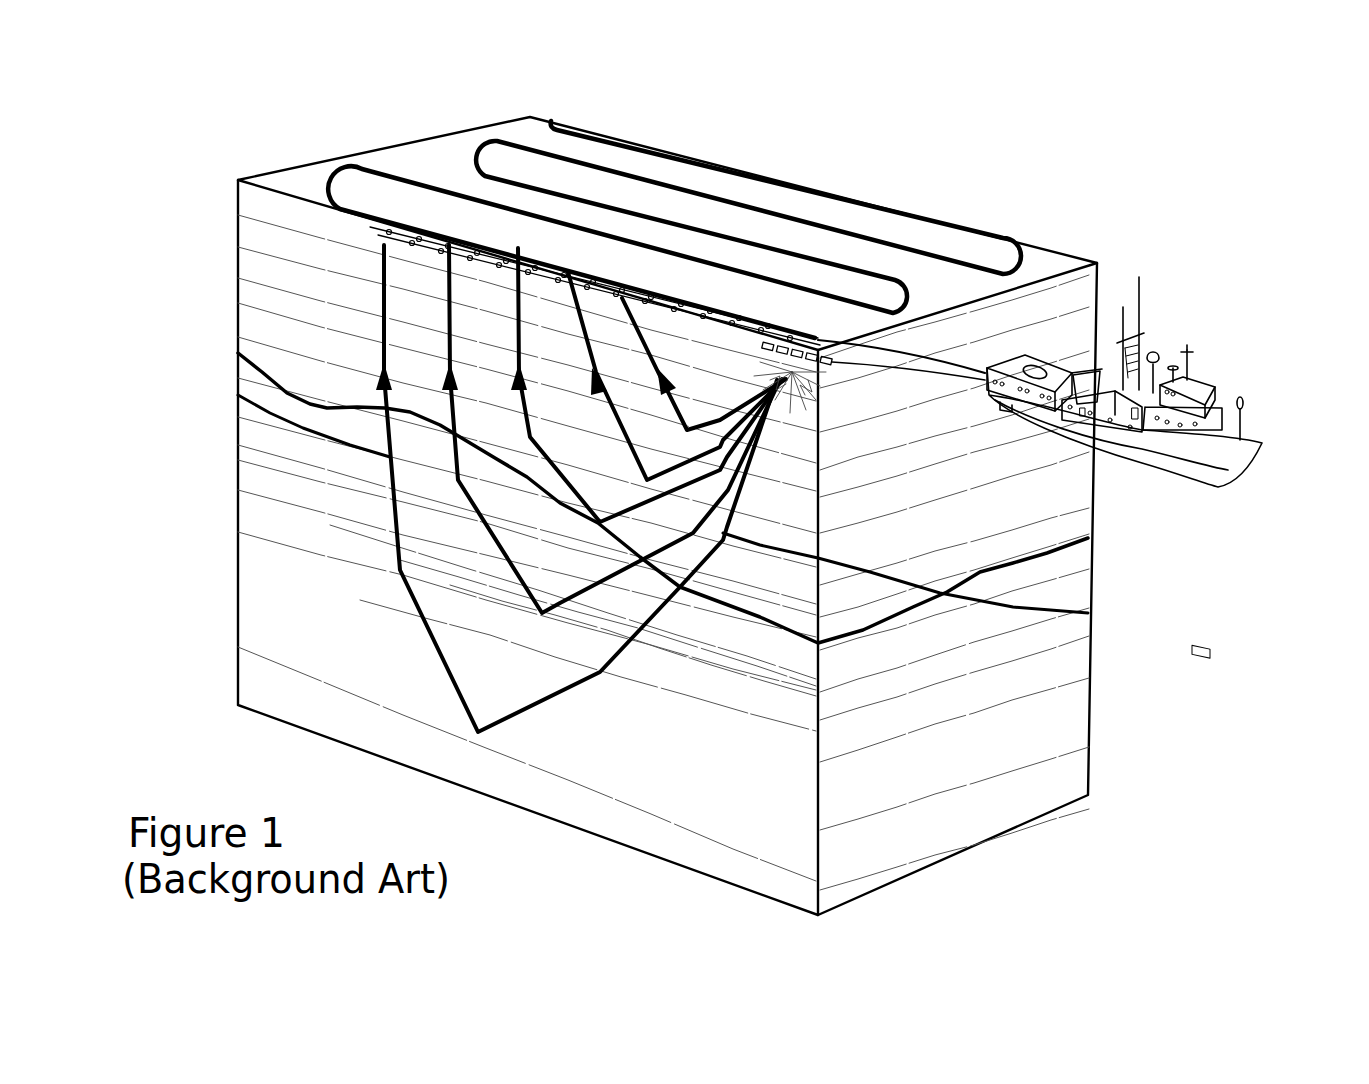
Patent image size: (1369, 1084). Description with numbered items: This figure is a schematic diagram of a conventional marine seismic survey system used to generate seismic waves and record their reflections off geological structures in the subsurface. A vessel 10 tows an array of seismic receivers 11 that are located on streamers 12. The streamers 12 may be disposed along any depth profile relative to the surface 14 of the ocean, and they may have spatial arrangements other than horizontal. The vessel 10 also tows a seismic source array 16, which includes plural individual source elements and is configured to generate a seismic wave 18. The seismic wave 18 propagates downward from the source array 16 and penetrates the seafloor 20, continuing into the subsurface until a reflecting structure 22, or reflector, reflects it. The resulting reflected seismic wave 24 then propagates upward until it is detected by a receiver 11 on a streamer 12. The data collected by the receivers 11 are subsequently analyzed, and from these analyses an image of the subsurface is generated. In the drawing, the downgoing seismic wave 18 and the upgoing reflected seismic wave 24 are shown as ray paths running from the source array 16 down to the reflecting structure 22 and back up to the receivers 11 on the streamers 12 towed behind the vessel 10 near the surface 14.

The vessel 10 is at (1222, 366).
The seismic receivers 11 is at (589, 272).
The streamers 12 is at (822, 333).
The surface of the ocean 14 is at (417, 162).
The seismic source array 16 is at (822, 338).
The seismic wave 18 is at (1088, 613).
The seafloor 20 is at (1046, 541).
The reflecting structure 22 is at (340, 536).
The reflected seismic wave 24 is at (238, 395).